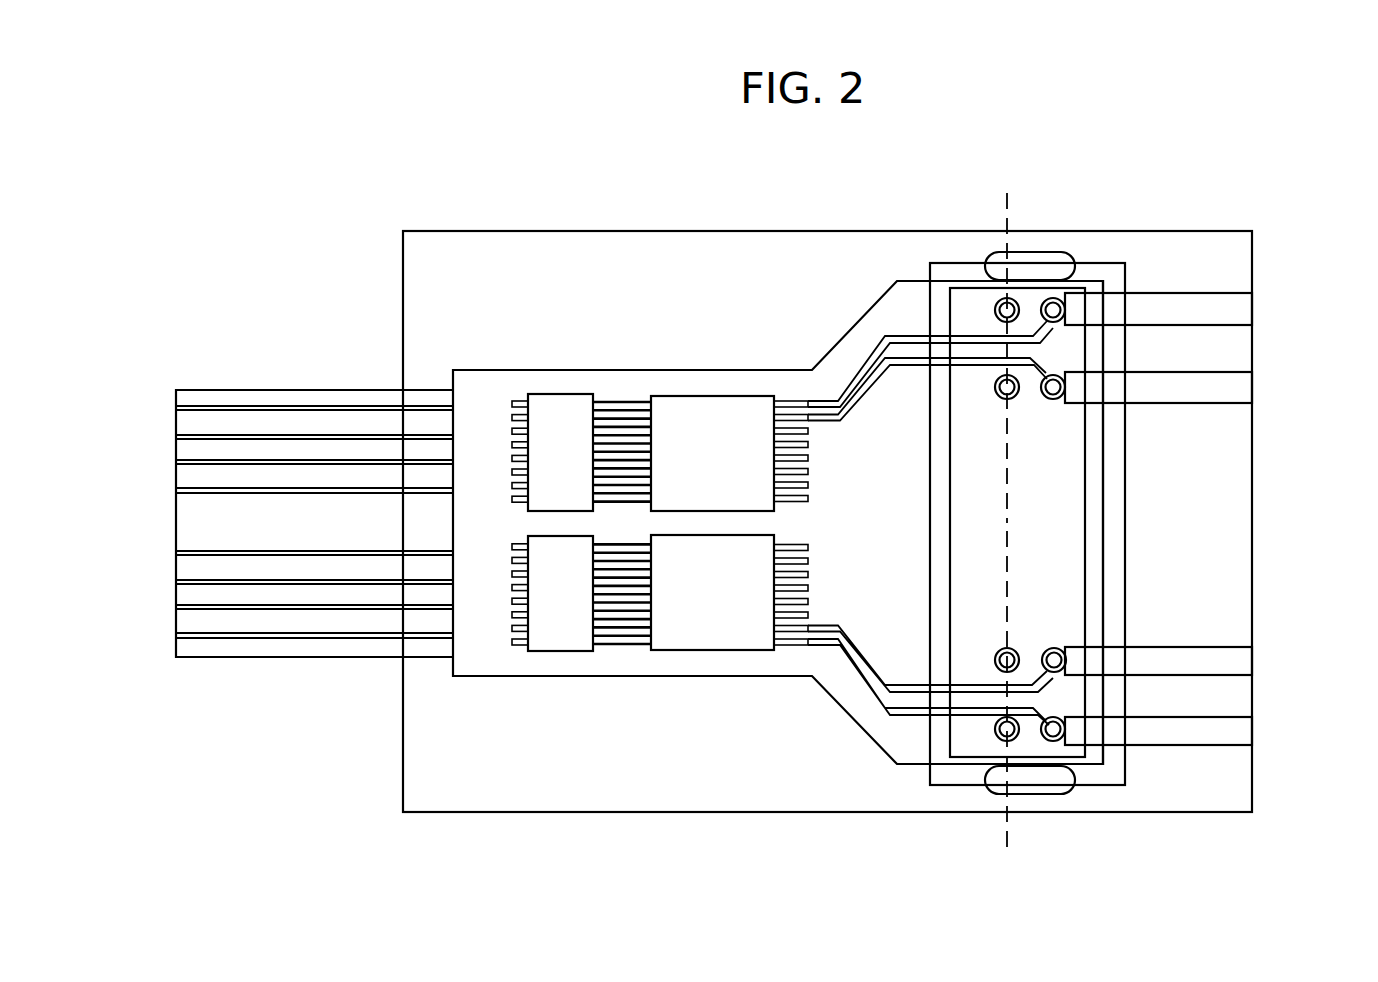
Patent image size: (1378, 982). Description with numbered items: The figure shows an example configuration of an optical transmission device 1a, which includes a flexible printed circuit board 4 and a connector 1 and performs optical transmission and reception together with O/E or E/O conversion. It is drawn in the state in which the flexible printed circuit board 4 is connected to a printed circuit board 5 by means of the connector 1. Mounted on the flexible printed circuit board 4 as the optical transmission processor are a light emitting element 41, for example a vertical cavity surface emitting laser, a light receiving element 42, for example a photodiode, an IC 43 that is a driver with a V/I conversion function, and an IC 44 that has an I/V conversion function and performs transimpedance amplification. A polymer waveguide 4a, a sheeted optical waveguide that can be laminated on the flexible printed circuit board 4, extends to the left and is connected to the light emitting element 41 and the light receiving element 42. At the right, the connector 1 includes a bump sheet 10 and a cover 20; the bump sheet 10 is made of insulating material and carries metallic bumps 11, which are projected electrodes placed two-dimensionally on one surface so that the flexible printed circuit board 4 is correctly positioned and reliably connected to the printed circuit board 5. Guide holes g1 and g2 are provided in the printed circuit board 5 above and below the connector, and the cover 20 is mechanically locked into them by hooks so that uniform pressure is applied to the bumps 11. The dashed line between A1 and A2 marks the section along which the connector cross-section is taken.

The connector 1 is at (704, 512).
The optical transmission device 1a is at (485, 360).
The flexible printed circuit board 4 is at (578, 676).
The polymer waveguide 4a is at (205, 390).
The printed circuit board 5 is at (1162, 812).
The bump sheet 10 is at (1103, 280).
The bump 11 is at (1048, 397).
The cover 20 is at (1128, 280).
The light emitting element 41 is at (560, 392).
The light receiving element 42 is at (547, 651).
The IC 43 is at (710, 396).
The IC 44 is at (707, 652).
The guide hole g1 is at (1050, 253).
The guide hole g2 is at (1055, 795).
The cross-section line end A1 is at (1012, 342).
The cross-section line end A2 is at (1007, 700).